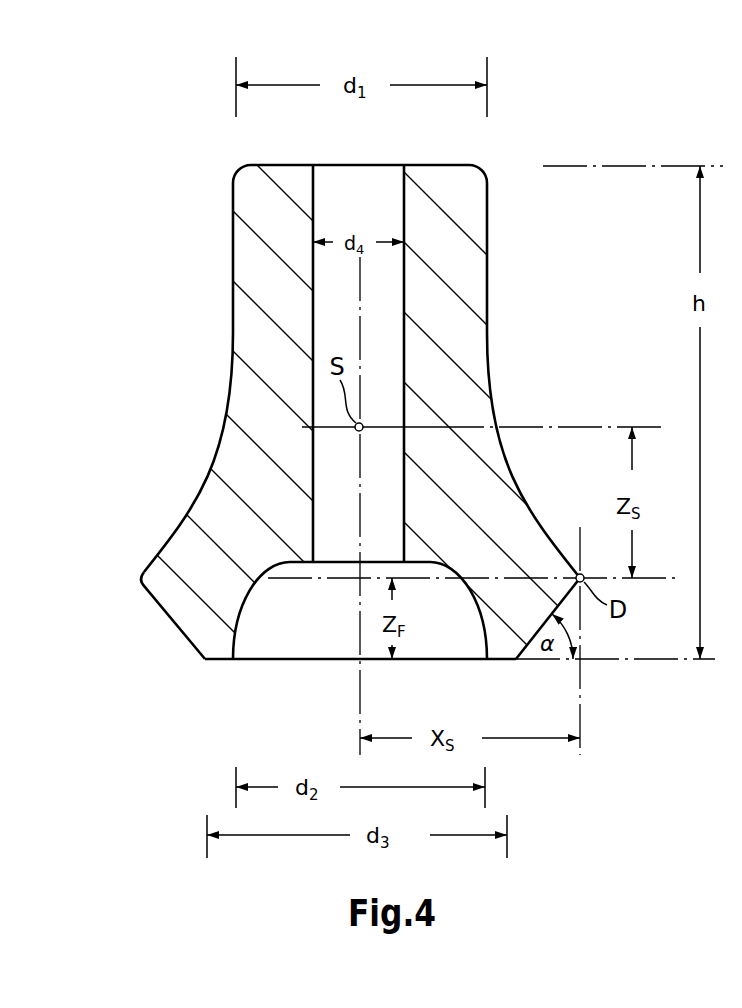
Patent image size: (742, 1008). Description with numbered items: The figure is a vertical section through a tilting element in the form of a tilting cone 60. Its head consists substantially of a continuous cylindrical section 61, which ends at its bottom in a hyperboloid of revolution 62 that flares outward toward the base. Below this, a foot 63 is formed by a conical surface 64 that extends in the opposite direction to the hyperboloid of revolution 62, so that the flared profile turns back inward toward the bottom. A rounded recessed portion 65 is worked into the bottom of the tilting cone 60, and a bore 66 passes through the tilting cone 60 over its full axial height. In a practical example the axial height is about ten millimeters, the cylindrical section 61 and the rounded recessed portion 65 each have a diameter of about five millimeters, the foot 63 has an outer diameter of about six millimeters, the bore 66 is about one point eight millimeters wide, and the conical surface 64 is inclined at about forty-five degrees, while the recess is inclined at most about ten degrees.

The tilting cone 60 is at (541, 140).
The cylindrical section 61 is at (470, 341).
The hyperboloid of revolution 62 is at (362, 455).
The foot 63 is at (197, 618).
The conical surface 64 is at (160, 615).
The rounded recessed portion 65 is at (250, 617).
The bore 66 is at (397, 207).